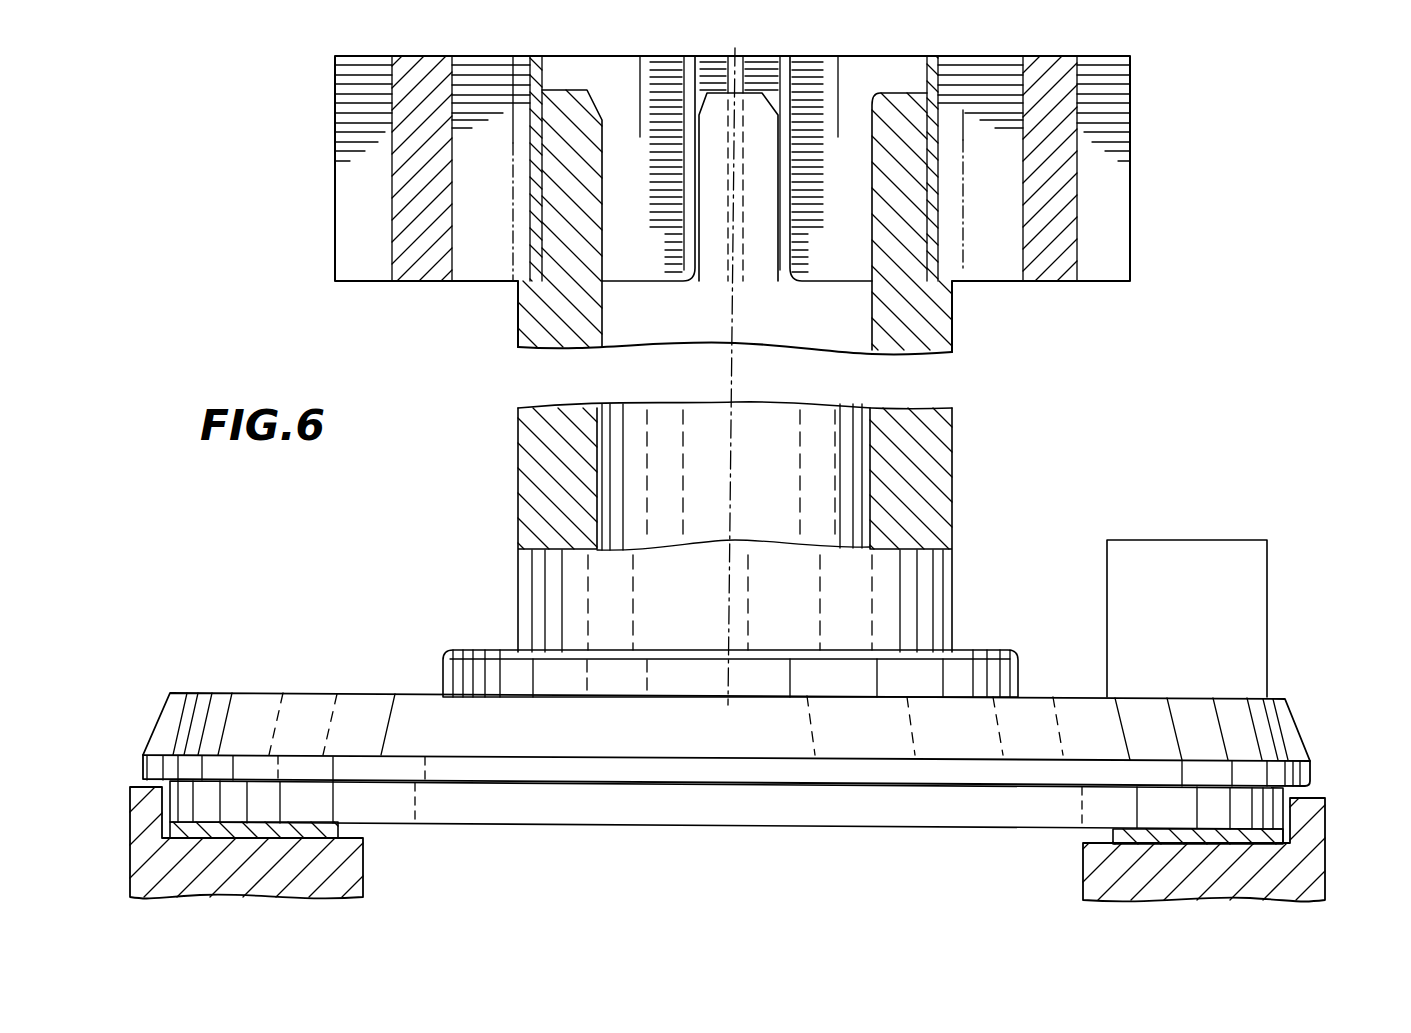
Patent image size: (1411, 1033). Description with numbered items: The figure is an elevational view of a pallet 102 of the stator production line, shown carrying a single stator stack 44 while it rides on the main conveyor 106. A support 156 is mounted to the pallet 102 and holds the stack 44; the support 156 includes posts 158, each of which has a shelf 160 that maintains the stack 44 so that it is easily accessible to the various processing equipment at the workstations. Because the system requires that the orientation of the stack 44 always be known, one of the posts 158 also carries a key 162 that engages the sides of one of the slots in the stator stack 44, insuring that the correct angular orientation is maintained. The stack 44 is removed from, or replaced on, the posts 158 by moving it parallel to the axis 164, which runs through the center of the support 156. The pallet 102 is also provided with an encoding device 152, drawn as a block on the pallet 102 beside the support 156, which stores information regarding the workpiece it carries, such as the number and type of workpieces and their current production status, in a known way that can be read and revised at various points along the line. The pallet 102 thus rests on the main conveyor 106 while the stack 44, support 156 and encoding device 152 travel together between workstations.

The stator stack 44 is at (1131, 186).
The posts 158 is at (565, 92).
The shelf 160 is at (519, 298).
The key 162 is at (747, 283).
The axis 164 is at (734, 370).
The support 156 is at (954, 475).
The encoding device 152 is at (1197, 540).
The pallet 102 is at (1311, 740).
The main conveyor 106 is at (340, 830).